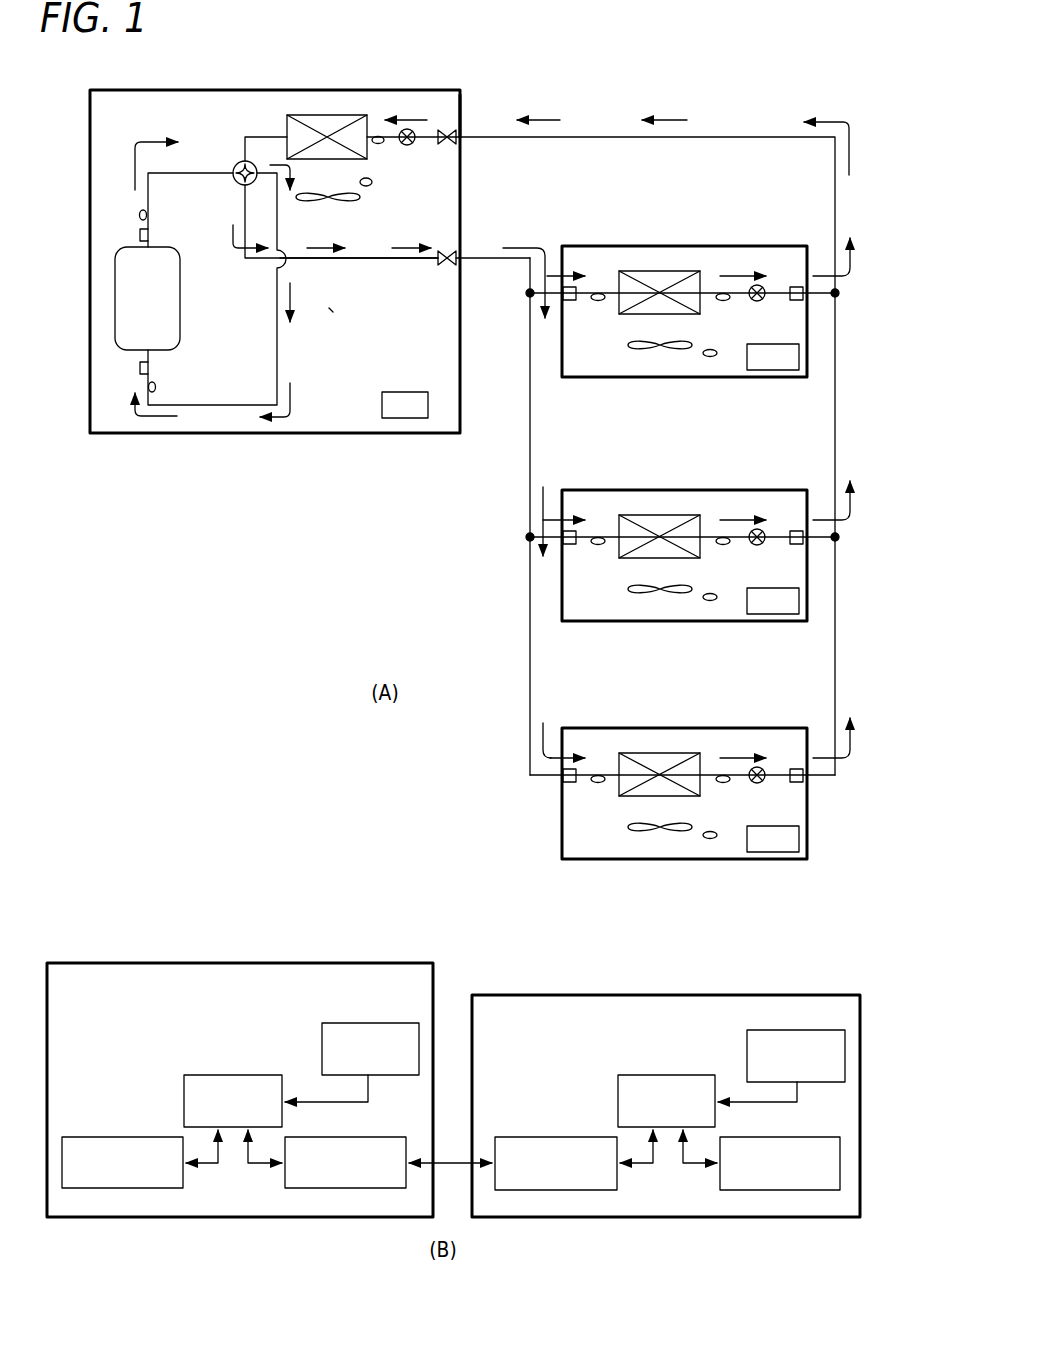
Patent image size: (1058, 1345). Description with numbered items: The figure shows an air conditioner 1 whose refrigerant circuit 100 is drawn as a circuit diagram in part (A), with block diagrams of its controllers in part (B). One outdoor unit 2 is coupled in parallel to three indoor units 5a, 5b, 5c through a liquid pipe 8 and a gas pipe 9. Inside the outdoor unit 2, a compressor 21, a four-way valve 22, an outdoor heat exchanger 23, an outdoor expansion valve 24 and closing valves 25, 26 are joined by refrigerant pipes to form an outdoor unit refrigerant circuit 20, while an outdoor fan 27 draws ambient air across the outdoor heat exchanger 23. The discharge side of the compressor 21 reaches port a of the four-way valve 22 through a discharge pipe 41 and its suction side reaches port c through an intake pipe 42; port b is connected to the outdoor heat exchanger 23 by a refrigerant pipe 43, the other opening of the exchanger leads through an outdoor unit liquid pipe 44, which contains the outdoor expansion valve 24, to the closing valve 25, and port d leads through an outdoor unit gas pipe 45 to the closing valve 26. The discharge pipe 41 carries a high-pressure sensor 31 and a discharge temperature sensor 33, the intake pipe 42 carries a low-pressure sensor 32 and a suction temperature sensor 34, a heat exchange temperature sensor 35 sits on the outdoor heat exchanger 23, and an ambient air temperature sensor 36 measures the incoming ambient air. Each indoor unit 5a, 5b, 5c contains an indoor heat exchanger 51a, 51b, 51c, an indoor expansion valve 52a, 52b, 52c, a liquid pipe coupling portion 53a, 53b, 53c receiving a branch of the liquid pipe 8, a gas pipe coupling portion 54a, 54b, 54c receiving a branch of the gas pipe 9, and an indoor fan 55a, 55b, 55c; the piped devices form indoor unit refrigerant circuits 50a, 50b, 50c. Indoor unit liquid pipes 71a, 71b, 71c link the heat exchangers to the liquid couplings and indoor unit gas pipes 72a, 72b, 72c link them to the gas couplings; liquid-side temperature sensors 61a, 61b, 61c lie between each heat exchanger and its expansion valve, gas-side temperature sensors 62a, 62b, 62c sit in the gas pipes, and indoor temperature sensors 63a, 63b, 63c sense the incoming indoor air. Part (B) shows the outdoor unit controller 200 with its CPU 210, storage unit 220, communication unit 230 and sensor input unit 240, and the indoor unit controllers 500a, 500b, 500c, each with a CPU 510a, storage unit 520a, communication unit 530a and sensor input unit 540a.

The air conditioner 1 is at (782, 52).
The refrigerant circuit 100 is at (732, 120).
The outdoor unit 2 is at (274, 248).
The liquid pipe 8 is at (622, 137).
The gas pipe 9 is at (530, 470).
The outdoor unit refrigerant circuit 20 is at (331, 310).
The compressor 21 is at (115, 290).
The four-way valve 22 is at (237, 163).
The outdoor heat exchanger 23 is at (345, 115).
The outdoor expansion valve 24 is at (405, 129).
The closing valve 25 is at (463, 96).
The closing valve 26 is at (452, 251).
The outdoor fan 27 is at (338, 201).
The high-pressure sensor 31 is at (140, 235).
The low-pressure sensor 32 is at (140, 368).
The discharge temperature sensor 33 is at (140, 215).
The suction temperature sensor 34 is at (156, 388).
The heat exchange temperature sensor 35 is at (378, 136).
The ambient air temperature sensor 36 is at (372, 184).
The discharge pipe 41 is at (200, 173).
The intake pipe 42 is at (238, 406).
The refrigerant pipe 43 is at (277, 137).
The outdoor unit liquid pipe 44 is at (443, 130).
The outdoor unit gas pipe 45 is at (413, 262).
The outdoor unit controller 200 is at (240, 804).
The CPU 210 is at (233, 1087).
The storage unit 220 is at (122, 1149).
The communication unit 230 is at (345, 1149).
The sensor input unit 240 is at (370, 1035).
The indoor unit 5a is at (682, 300).
The indoor unit 5b is at (682, 544).
The indoor unit 5c is at (682, 781).
The indoor unit refrigerant circuit 50a is at (745, 308).
The indoor unit refrigerant circuit 50b is at (745, 552).
The indoor unit refrigerant circuit 50c is at (745, 790).
The indoor heat exchanger 51a is at (645, 271).
The indoor heat exchanger 51b is at (645, 515).
The indoor heat exchanger 51c is at (645, 753).
The indoor expansion valve 52a is at (757, 284).
The indoor expansion valve 52b is at (757, 528).
The indoor expansion valve 52c is at (757, 766).
The liquid pipe coupling portion 53a is at (797, 287).
The liquid pipe coupling portion 53b is at (797, 531).
The liquid pipe coupling portion 53c is at (797, 769).
The gas pipe coupling portion 54a is at (570, 300).
The gas pipe coupling portion 54b is at (570, 544).
The gas pipe coupling portion 54c is at (570, 782).
The indoor fan 55a is at (645, 349).
The indoor fan 55b is at (645, 593).
The indoor fan 55c is at (645, 831).
The liquid-side temperature sensor 61a is at (728, 301).
The liquid-side temperature sensor 61b is at (728, 545).
The liquid-side temperature sensor 61c is at (728, 783).
The gas-side temperature sensor 62a is at (598, 301).
The gas-side temperature sensor 62b is at (598, 545).
The gas-side temperature sensor 62c is at (598, 783).
The indoor temperature sensor 63a is at (710, 357).
The indoor temperature sensor 63b is at (710, 601).
The indoor temperature sensor 63c is at (710, 839).
The indoor unit liquid pipe 71a is at (712, 290).
The indoor unit liquid pipe 71b is at (712, 534).
The indoor unit liquid pipe 71c is at (712, 772).
The indoor unit gas pipe 72a is at (611, 290).
The indoor unit gas pipe 72b is at (611, 534).
The indoor unit gas pipe 72c is at (611, 772).
The indoor unit controller 500a is at (666, 780).
The indoor unit controller 500b is at (773, 601).
The indoor unit controller 500c is at (773, 839).
The CPU 510a is at (665, 1087).
The storage unit 520a is at (782, 1151).
The communication unit 530a is at (554, 1151).
The sensor input unit 540a is at (791, 1044).